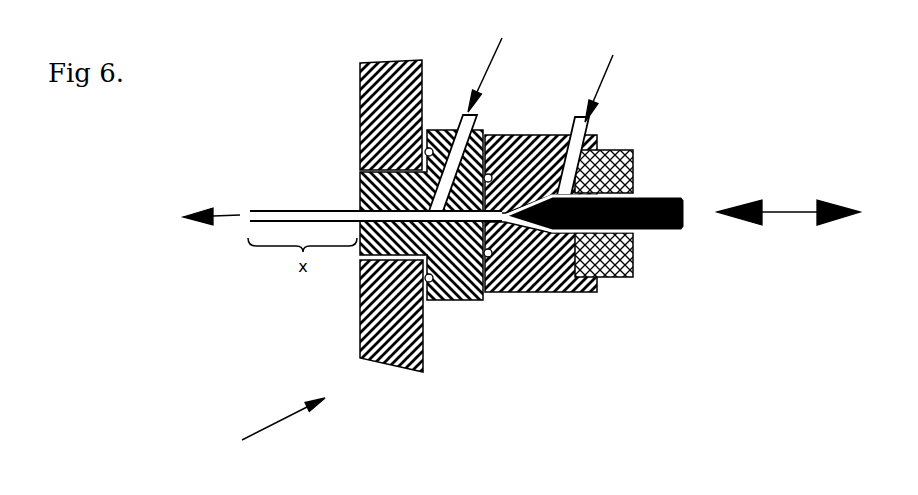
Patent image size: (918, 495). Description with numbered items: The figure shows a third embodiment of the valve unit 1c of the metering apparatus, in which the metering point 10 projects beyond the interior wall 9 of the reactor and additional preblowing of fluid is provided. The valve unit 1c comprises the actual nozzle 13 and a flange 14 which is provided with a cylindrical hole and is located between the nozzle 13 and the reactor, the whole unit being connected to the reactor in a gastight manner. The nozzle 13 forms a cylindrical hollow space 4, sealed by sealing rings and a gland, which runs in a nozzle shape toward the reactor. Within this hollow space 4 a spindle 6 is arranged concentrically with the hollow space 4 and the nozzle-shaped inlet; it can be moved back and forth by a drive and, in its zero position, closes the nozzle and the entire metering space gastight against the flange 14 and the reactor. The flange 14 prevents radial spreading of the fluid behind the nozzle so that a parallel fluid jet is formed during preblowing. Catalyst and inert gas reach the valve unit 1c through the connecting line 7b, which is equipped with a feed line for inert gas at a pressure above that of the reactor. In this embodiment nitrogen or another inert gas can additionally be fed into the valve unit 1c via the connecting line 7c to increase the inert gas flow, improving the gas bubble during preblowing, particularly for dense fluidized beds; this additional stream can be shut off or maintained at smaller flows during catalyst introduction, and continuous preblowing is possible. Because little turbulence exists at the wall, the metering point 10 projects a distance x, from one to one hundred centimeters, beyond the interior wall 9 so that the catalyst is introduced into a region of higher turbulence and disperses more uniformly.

The valve unit 1c is at (269, 429).
The cylindrical hollow space 4 is at (597, 137).
The spindle 6 is at (668, 231).
The connecting line 7b is at (577, 133).
The connecting line 7c is at (459, 115).
The interior wall of the reactor 9 is at (358, 306).
The metering point 10 is at (247, 222).
The nozzle 13 is at (553, 294).
The flange 14 is at (445, 125).